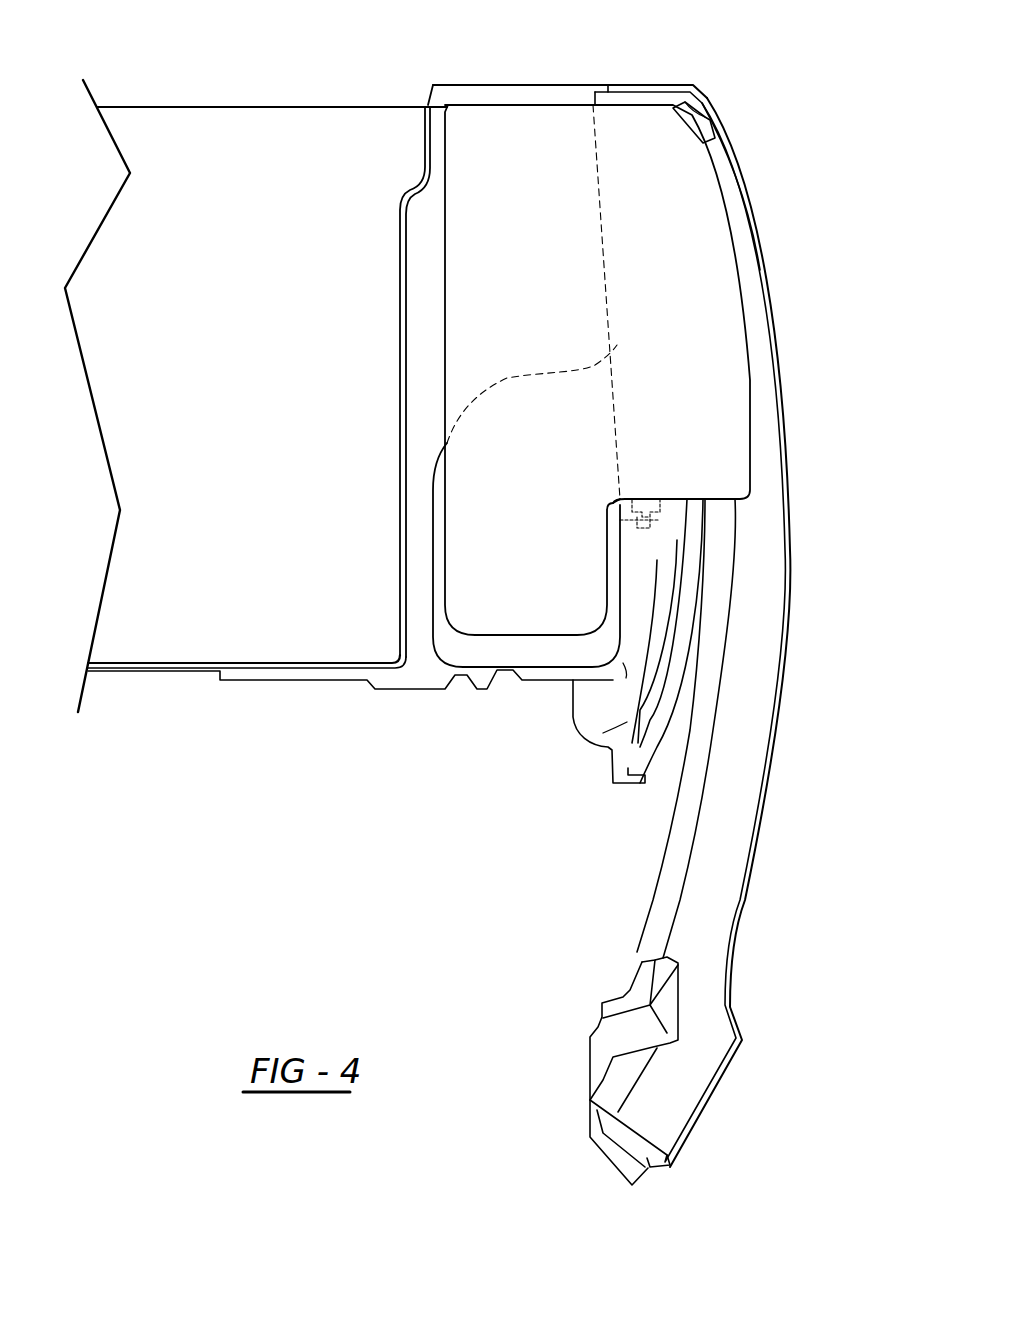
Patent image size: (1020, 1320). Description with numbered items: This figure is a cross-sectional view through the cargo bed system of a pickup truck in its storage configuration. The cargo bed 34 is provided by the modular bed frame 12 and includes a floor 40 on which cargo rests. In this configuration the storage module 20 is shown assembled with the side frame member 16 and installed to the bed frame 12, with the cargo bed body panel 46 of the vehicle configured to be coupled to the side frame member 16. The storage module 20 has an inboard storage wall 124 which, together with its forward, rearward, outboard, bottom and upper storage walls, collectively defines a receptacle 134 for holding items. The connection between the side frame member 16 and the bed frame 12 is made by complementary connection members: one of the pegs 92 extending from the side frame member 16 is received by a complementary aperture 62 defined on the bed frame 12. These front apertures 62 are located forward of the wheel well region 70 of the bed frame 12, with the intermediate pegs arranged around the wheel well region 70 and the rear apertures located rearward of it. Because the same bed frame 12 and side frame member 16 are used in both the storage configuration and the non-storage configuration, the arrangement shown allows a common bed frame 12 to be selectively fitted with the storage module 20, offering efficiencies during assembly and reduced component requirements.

The bed frame 12 is at (248, 663).
The side frame member 16 is at (688, 505).
The storage module 20 is at (550, 103).
The cargo bed 34 is at (232, 147).
The floor 40 is at (137, 663).
The cargo bed body panel 46 is at (750, 725).
The front series of apertures 62 is at (613, 510).
The wheel well region 70 is at (500, 391).
The front series of pegs 92 is at (627, 522).
The inboard storage wall 124 is at (400, 358).
The receptacle 134 is at (545, 249).